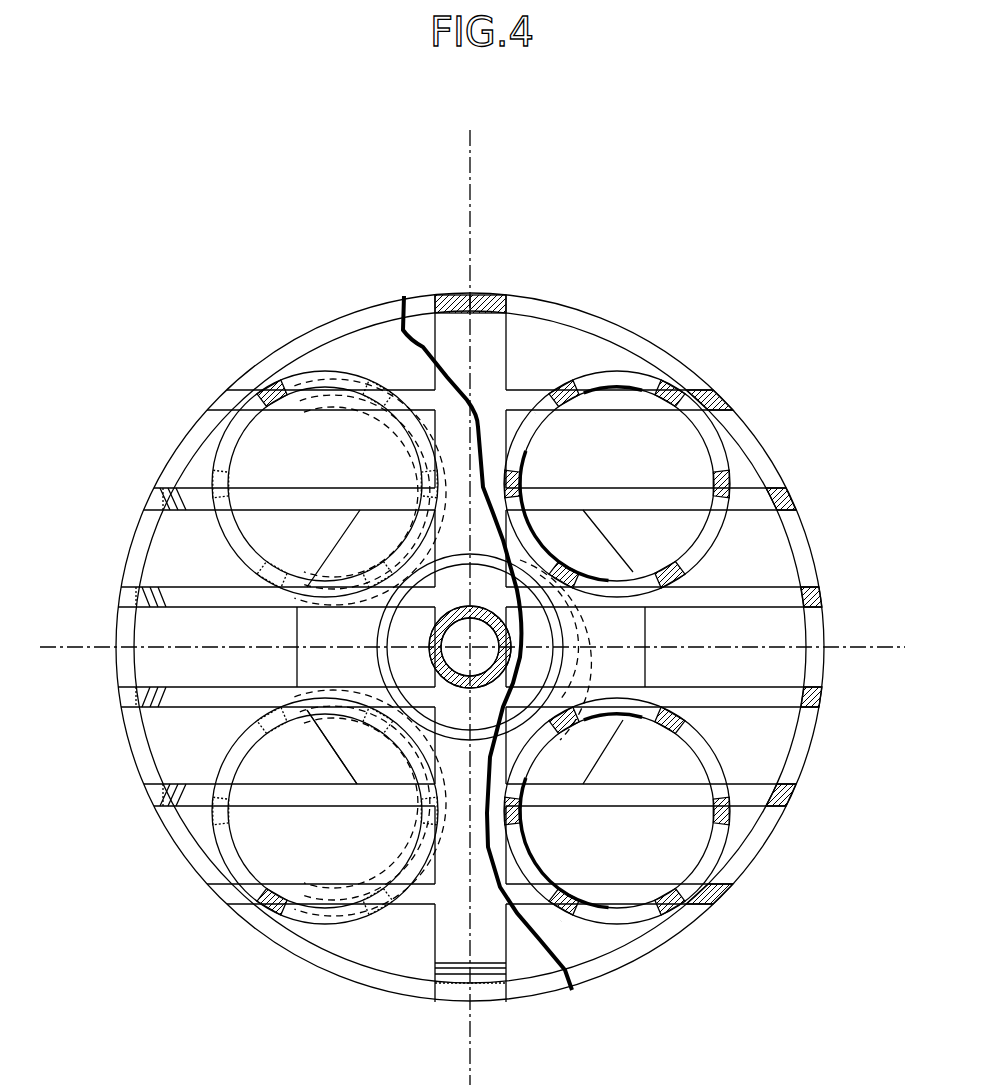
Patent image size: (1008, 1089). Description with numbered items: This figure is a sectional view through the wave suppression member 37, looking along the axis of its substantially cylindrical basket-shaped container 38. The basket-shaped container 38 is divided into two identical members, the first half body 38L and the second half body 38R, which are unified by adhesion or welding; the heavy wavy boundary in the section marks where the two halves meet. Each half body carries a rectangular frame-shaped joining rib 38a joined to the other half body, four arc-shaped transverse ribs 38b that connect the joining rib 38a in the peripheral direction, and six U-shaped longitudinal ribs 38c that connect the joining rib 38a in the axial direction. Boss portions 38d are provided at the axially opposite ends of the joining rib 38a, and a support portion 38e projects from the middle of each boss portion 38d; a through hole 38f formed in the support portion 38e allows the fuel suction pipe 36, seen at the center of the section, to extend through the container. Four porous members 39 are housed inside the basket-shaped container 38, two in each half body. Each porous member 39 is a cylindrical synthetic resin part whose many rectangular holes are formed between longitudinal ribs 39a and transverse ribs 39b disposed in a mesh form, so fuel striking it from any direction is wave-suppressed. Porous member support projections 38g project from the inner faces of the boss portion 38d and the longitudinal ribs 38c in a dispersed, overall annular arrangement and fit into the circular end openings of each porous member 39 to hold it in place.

The fuel suction pipe 36 is at (440, 640).
The wave suppression member 37 is at (679, 219).
The basket-shaped container 38 is at (575, 297).
The first half body 38L is at (287, 341).
The second half body 38R is at (674, 345).
The joining rib 38a is at (458, 292).
The transverse rib 38b is at (136, 555).
The longitudinal rib 38c is at (726, 405).
The boss portion 38d is at (333, 755).
The support portion 38e is at (410, 690).
The through hole 38f is at (470, 625).
The porous member support projection 38g is at (690, 500).
The porous member 39 is at (340, 368).
The longitudinal rib 39a is at (694, 395).
The transverse rib 39b is at (534, 412).